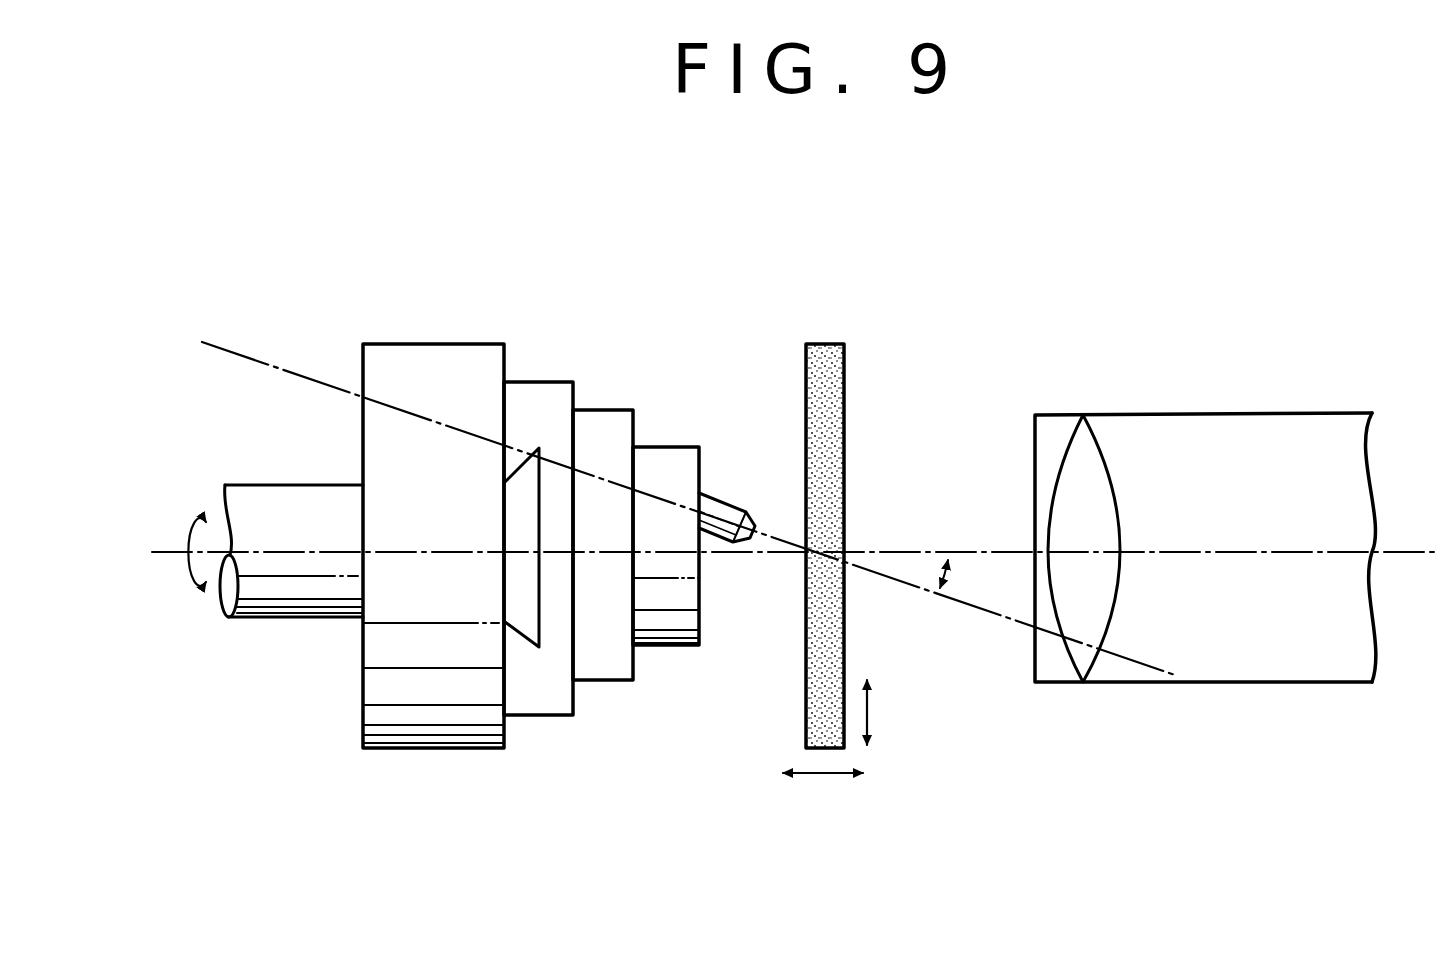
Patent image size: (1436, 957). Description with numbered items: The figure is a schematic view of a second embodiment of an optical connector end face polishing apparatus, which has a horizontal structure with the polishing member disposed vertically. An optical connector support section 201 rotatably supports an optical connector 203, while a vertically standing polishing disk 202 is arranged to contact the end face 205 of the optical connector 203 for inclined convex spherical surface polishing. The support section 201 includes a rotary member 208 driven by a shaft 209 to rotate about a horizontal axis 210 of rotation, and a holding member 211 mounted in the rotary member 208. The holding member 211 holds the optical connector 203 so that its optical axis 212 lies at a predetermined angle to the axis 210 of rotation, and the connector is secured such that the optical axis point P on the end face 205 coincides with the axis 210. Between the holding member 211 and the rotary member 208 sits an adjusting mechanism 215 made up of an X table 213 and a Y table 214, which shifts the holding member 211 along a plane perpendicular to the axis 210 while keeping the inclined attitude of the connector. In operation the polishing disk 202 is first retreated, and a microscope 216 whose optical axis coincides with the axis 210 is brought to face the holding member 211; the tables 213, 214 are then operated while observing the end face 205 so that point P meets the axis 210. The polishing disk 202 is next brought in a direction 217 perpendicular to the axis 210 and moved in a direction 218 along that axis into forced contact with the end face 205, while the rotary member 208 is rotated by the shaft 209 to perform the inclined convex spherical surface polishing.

The optical connector support section 201 is at (551, 352).
The polishing disk 202 is at (857, 348).
The optical connector 203 is at (730, 503).
The end face 205 is at (757, 547).
The optical axis point P is at (755, 535).
The rotary member 208 is at (407, 749).
The shaft 209 is at (287, 620).
The axis of rotation 210 is at (165, 556).
The holding member 211 is at (672, 650).
The optical axis 212 is at (250, 360).
The X table 213 is at (532, 716).
The Y table 214 is at (608, 681).
The adjusting mechanism 215 is at (665, 803).
The microscope 216 is at (1205, 412).
The direction perpendicular to the axis of rotation 217 is at (868, 707).
The direction of the axis of rotation 218 is at (828, 777).